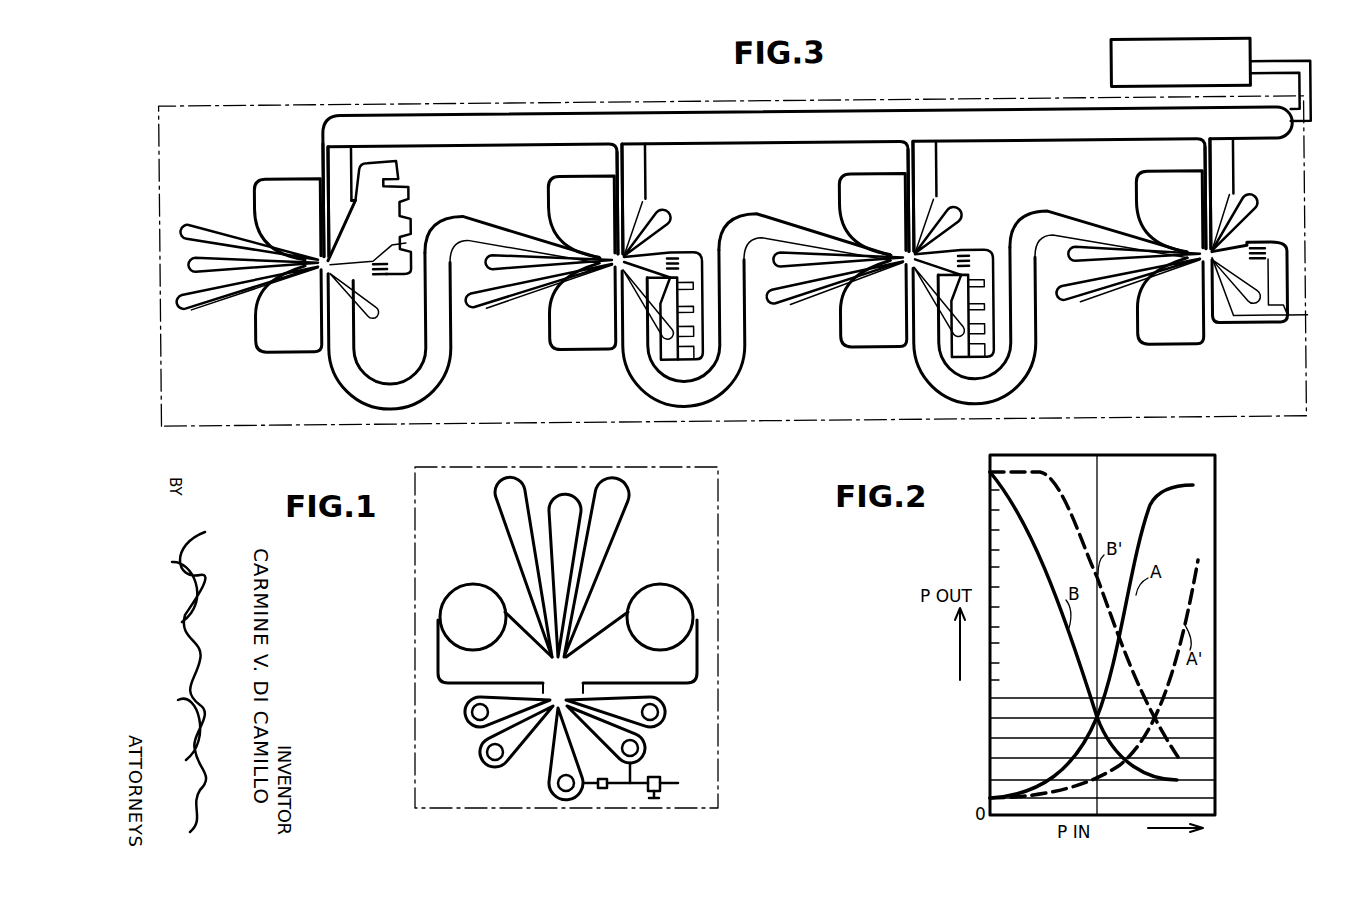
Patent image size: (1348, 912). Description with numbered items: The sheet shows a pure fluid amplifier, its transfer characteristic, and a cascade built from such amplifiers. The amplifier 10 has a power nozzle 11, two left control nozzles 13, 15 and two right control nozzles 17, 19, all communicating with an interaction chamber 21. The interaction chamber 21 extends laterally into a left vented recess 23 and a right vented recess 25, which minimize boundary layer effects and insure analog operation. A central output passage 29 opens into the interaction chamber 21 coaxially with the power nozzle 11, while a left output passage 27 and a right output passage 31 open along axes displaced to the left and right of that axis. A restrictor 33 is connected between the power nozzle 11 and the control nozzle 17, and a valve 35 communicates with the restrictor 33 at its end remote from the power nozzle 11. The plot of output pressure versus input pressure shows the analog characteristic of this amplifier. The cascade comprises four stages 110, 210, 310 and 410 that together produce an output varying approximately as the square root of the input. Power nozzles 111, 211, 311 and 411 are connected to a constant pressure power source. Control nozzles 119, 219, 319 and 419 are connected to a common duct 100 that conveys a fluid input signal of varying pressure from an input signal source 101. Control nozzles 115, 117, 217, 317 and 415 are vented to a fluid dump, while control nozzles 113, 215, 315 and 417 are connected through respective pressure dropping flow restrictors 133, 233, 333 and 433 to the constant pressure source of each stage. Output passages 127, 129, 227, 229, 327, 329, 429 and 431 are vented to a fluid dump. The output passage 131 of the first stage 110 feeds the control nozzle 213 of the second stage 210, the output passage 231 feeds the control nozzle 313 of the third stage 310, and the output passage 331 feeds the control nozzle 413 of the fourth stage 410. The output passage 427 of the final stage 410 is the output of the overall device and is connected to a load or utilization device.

In FIG. 3, the input signal source 101 is at (1215, 44).
In FIG. 3, the common duct 100 is at (1062, 128).
In FIG. 3, the fourth fluid amplifier stage 410 is at (312, 350).
In FIG. 3, the control nozzle of fourth stage 419 is at (324, 160).
In FIG. 3, the output passage of fourth stage 431 is at (196, 224).
In FIG. 3, the output passage of fourth stage 429 is at (188, 262).
In FIG. 3, the output passage of fourth stage 427 is at (190, 310).
In FIG. 3, the control nozzle of fourth stage 417 is at (355, 227).
In FIG. 3, the pressure dropping flow restrictor 433 is at (410, 200).
In FIG. 3, the power nozzle of fourth stage 411 is at (392, 273).
In FIG. 3, the control nozzle of fourth stage 415 is at (372, 311).
In FIG. 3, the control nozzle of fourth stage 413 is at (350, 328).
In FIG. 3, the output passage of third stage 331 is at (495, 232).
In FIG. 3, the third fluid amplifier stage 310 is at (630, 404).
In FIG. 3, the control nozzle of third stage 319 is at (638, 186).
In FIG. 3, the output passage of third stage 329 is at (496, 262).
In FIG. 3, the output passage of third stage 327 is at (486, 306).
In FIG. 3, the control nozzle of third stage 317 is at (665, 210).
In FIG. 3, the pressure dropping flow restrictor 333 is at (703, 255).
In FIG. 3, the power nozzle of third stage 311 is at (662, 256).
In FIG. 3, the control nozzle of third stage 315 is at (652, 328).
In FIG. 3, the control nozzle of third stage 313 is at (636, 356).
In FIG. 3, the output passage of second stage 231 is at (775, 225).
In FIG. 3, the second fluid amplifier stage 210 is at (935, 386).
In FIG. 3, the control nozzle of second stage 219 is at (932, 190).
In FIG. 3, the output passage of second stage 229 is at (788, 262).
In FIG. 3, the output passage of second stage 227 is at (788, 307).
In FIG. 3, the control nozzle of second stage 217 is at (957, 212).
In FIG. 3, the pressure dropping flow restrictor 233 is at (996, 256).
In FIG. 3, the power nozzle of second stage 211 is at (962, 250).
In FIG. 3, the control nozzle of second stage 215 is at (940, 300).
In FIG. 3, the control nozzle of second stage 213 is at (935, 350).
In FIG. 3, the output passage of first stage 131 is at (1068, 224).
In FIG. 3, the first fluid amplifier stage 110 is at (1214, 340).
In FIG. 3, the control nozzle of first stage 119 is at (1222, 196).
In FIG. 3, the output passage of first stage 129 is at (1080, 258).
In FIG. 3, the output passage of first stage 127 is at (1072, 300).
In FIG. 3, the control nozzle of first stage 117 is at (1252, 208).
In FIG. 3, the power nozzle of first stage 111 is at (1248, 248).
In FIG. 3, the control nozzle of first stage 113 is at (1224, 326).
In FIG. 3, the control nozzle of first stage 115 is at (1262, 302).
In FIG. 3, the pressure dropping flow restrictor 133 is at (1306, 321).
In FIG. 1, the pure fluid amplifier 10 is at (718, 670).
In FIG. 1, the power nozzle 11 is at (552, 760).
In FIG. 1, the left control nozzle 13 is at (465, 700).
In FIG. 1, the left control nozzle 15 is at (484, 740).
In FIG. 1, the right control nozzle 17 is at (645, 738).
In FIG. 1, the right control nozzle 19 is at (662, 700).
In FIG. 1, the interaction chamber 21 is at (572, 692).
In FIG. 1, the left vented recess 23 is at (462, 602).
In FIG. 1, the right vented recess 25 is at (668, 600).
In FIG. 1, the left output passage 27 is at (512, 522).
In FIG. 1, the central output passage 29 is at (563, 505).
In FIG. 1, the right output passage 31 is at (608, 514).
In FIG. 1, the restrictor 33 is at (601, 790).
In FIG. 1, the valve 35 is at (660, 794).